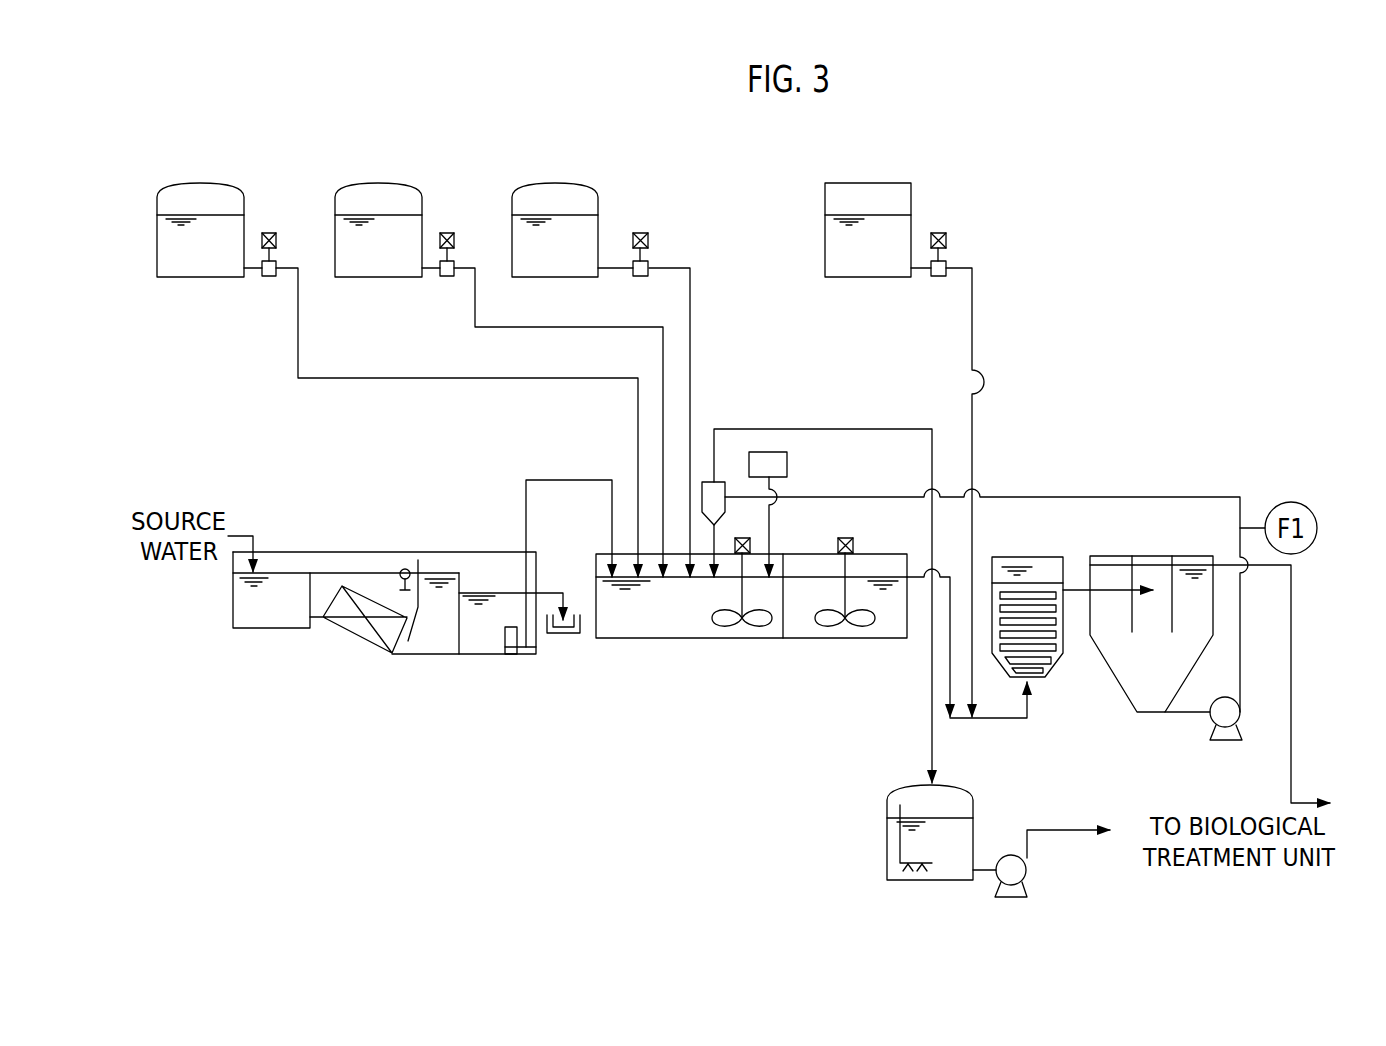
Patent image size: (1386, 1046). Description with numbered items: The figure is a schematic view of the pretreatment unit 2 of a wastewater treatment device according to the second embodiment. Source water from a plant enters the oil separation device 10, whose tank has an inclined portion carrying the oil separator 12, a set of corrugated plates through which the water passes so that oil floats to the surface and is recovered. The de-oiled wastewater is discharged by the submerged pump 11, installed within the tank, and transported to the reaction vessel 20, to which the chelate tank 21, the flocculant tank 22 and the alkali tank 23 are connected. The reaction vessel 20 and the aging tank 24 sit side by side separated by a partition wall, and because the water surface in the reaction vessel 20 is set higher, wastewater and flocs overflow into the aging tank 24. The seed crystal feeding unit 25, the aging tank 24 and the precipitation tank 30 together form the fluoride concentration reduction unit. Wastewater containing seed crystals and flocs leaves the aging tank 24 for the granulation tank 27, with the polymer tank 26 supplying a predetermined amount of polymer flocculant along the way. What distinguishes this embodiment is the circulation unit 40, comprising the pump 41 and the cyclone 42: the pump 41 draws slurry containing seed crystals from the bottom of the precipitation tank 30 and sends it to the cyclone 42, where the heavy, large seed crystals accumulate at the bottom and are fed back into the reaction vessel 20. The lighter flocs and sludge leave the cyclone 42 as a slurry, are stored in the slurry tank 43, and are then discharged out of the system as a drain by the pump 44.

The pretreatment unit 2 is at (478, 489).
The oil separation device 10 is at (329, 552).
The submerged pump 11 is at (511, 640).
The oil separator 12 is at (363, 633).
The reaction vessel 20 is at (662, 640).
The chelate tank 21 is at (184, 183).
The flocculant tank 22 is at (361, 183).
The alkali tank 23 is at (539, 183).
The aging tank 24 is at (806, 640).
The seed crystal feeding unit 25 is at (787, 468).
The polymer tank 26 is at (869, 183).
The granulation tank 27 is at (1055, 668).
The precipitation tank 30 is at (1147, 715).
The circulation unit 40 is at (1180, 468).
The pump 41 is at (1226, 742).
The cyclone 42 is at (727, 490).
The slurry tank 43 is at (887, 843).
The pump 44 is at (1030, 890).